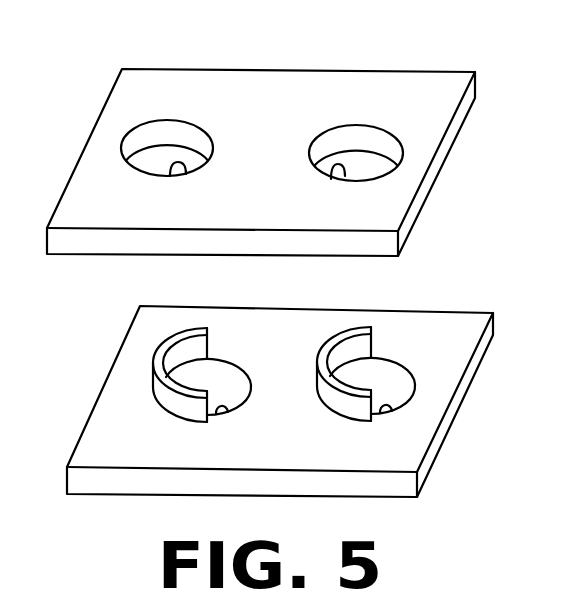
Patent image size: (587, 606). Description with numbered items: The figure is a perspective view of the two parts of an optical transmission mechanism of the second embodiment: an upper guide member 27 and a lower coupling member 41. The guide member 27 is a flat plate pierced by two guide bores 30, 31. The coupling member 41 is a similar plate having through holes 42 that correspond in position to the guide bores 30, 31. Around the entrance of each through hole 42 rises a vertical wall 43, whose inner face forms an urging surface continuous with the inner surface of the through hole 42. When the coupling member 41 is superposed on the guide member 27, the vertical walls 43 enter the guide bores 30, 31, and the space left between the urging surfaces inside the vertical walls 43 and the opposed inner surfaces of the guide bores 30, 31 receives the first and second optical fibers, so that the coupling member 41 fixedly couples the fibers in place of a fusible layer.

The guide member 27 is at (330, 70).
The guide bore 30 is at (186, 172).
The guide bore 31 is at (333, 172).
The coupling member 41 is at (463, 390).
The through hole 42 is at (233, 412).
The vertical wall 43 is at (161, 388).